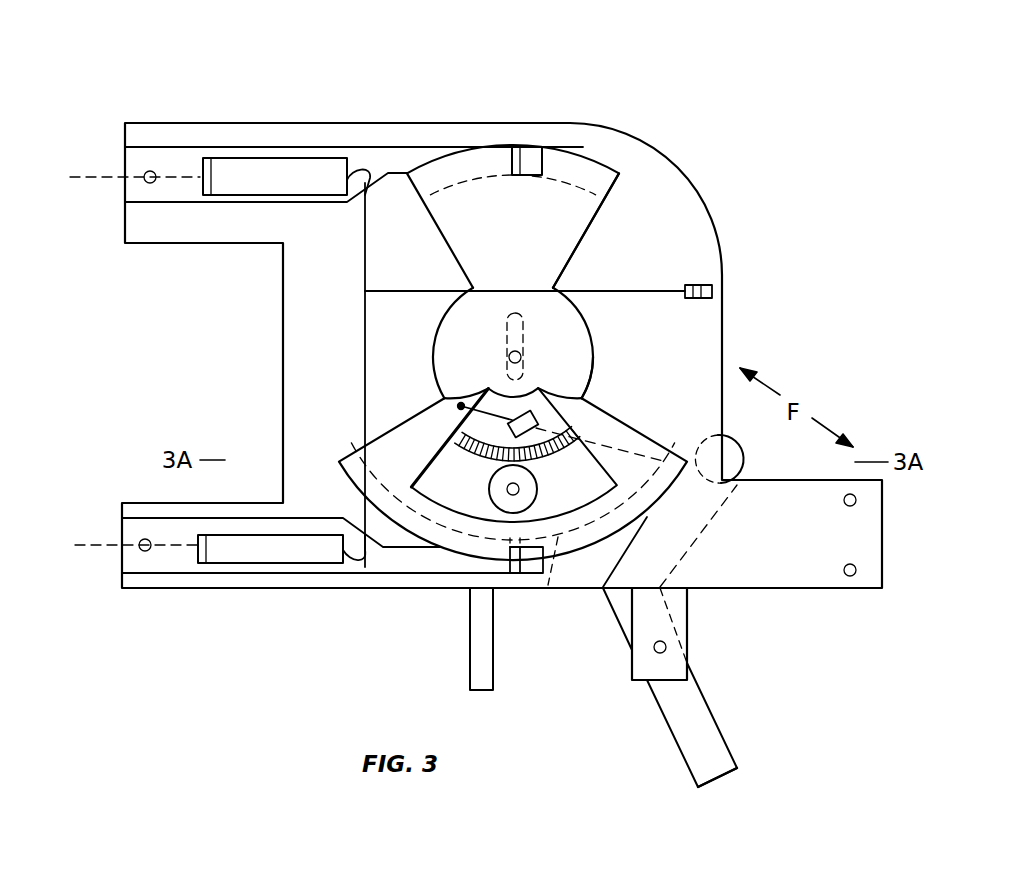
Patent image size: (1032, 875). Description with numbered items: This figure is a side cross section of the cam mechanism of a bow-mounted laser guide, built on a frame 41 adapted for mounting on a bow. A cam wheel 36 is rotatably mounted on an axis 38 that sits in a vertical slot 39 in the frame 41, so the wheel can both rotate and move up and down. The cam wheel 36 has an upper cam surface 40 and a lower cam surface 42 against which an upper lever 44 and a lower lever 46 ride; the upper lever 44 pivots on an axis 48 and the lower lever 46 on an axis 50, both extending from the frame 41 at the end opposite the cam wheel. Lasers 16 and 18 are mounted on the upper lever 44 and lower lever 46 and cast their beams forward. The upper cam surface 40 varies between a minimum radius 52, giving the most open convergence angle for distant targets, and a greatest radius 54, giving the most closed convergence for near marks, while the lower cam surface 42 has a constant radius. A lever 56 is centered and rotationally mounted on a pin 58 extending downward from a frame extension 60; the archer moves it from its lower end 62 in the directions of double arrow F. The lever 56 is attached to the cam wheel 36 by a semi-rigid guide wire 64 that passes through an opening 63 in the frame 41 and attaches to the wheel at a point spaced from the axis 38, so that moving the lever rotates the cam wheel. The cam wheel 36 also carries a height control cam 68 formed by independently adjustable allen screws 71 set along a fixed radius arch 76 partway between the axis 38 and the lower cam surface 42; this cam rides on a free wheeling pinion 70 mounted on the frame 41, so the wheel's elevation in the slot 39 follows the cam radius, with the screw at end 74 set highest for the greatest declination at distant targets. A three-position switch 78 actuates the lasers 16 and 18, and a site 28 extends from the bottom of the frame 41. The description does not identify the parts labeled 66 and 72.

The laser 16 is at (295, 158).
The laser 18 is at (290, 563).
The site 28 is at (469, 664).
The cam wheel 36 is at (590, 322).
The axis 38 is at (521, 356).
The vertical slot 39 is at (517, 313).
The upper cam surface 40 is at (577, 175).
The frame 41 is at (690, 185).
The lower cam surface 42 is at (544, 588).
The upper lever 44 is at (403, 148).
The lower lever 46 is at (402, 574).
The axis 48 is at (145, 182).
The axis 50 is at (143, 548).
The minimum radius 52 is at (450, 235).
The greatest radius 54 is at (602, 232).
The lever 56 is at (702, 690).
The pin 58 is at (655, 648).
The frame extension 60 is at (688, 610).
The lower end 62 is at (712, 758).
The opening 63 is at (588, 380).
The semi-rigid guide wire 64 is at (498, 388).
The hub 66 is at (746, 452).
The height control cam 68 is at (575, 447).
The free wheeling pinion 70 is at (538, 489).
The allen screws 71 is at (468, 452).
The lower sector plate 72 is at (443, 450).
The end 74 is at (605, 432).
The fixed radius arch 76 is at (459, 405).
The three position switch 78 is at (713, 292).